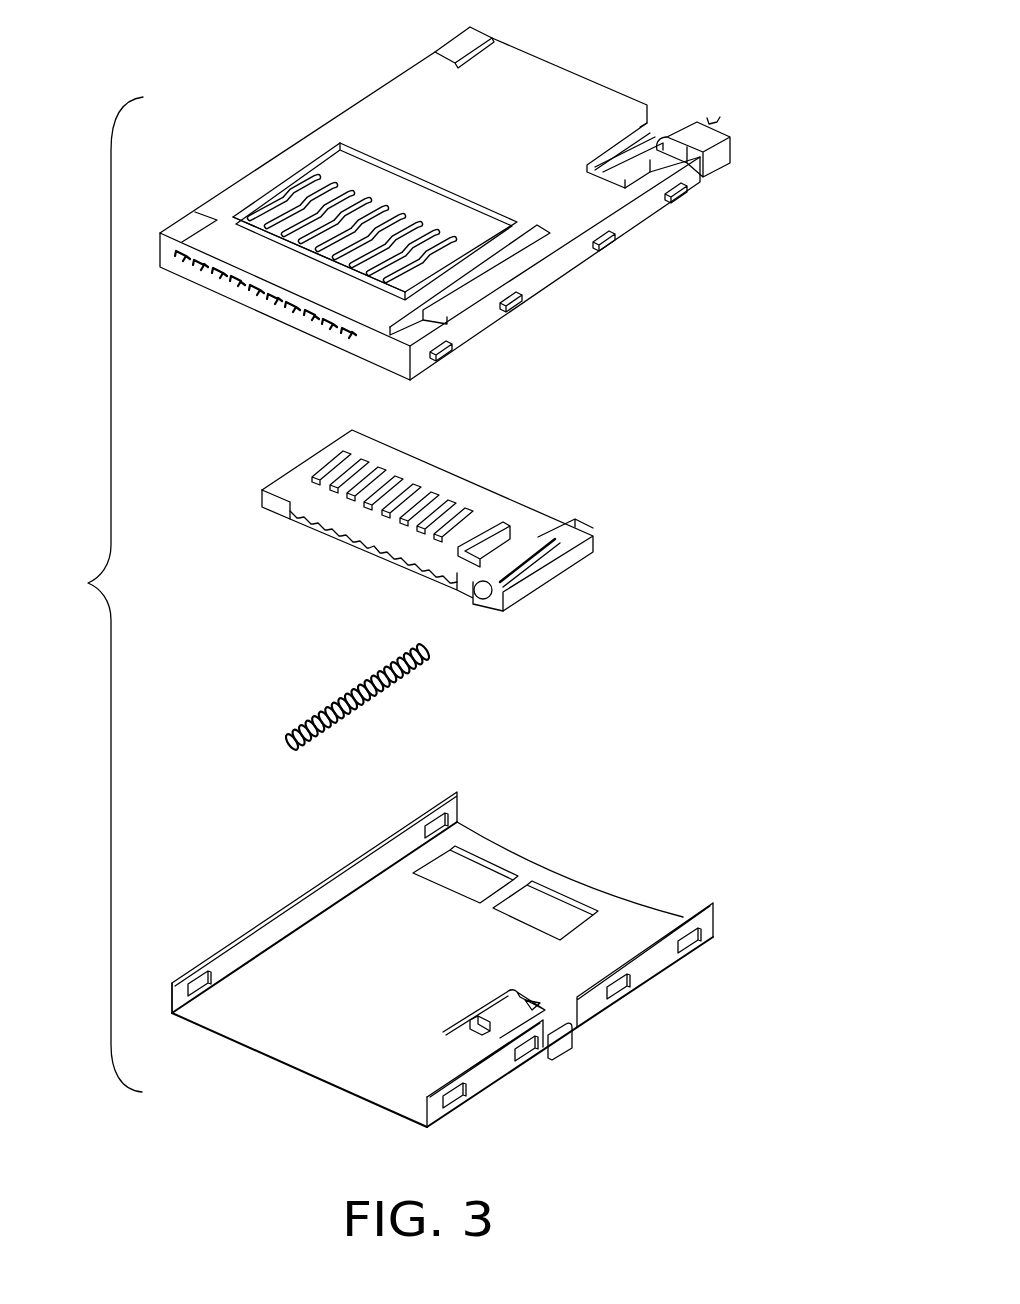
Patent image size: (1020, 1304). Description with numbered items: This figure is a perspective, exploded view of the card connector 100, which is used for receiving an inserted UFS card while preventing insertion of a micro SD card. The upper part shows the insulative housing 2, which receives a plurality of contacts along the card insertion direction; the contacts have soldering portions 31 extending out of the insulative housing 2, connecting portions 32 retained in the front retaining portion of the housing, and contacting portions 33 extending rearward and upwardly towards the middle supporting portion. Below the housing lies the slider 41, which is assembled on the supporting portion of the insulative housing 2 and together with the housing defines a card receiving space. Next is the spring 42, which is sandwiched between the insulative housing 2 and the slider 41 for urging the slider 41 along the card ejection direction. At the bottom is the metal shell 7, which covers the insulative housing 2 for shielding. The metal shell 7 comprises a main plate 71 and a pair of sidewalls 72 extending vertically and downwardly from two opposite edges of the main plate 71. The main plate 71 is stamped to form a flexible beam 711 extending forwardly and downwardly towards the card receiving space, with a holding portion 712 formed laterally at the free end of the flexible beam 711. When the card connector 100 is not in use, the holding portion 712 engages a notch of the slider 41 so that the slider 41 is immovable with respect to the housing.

The card connector 100 is at (87, 584).
The insulative housing 2 is at (417, 108).
The soldering portions 31 is at (175, 254).
The connecting portions 32 is at (258, 216).
The contacting portions 33 is at (313, 180).
The slider 41 is at (294, 449).
The spring 42 is at (314, 669).
The metal shell 7 is at (461, 932).
The main plate 71 is at (313, 1045).
The sidewalls 72 is at (453, 812).
The flexible beam 711 is at (540, 1003).
The holding portion 712 is at (487, 1034).